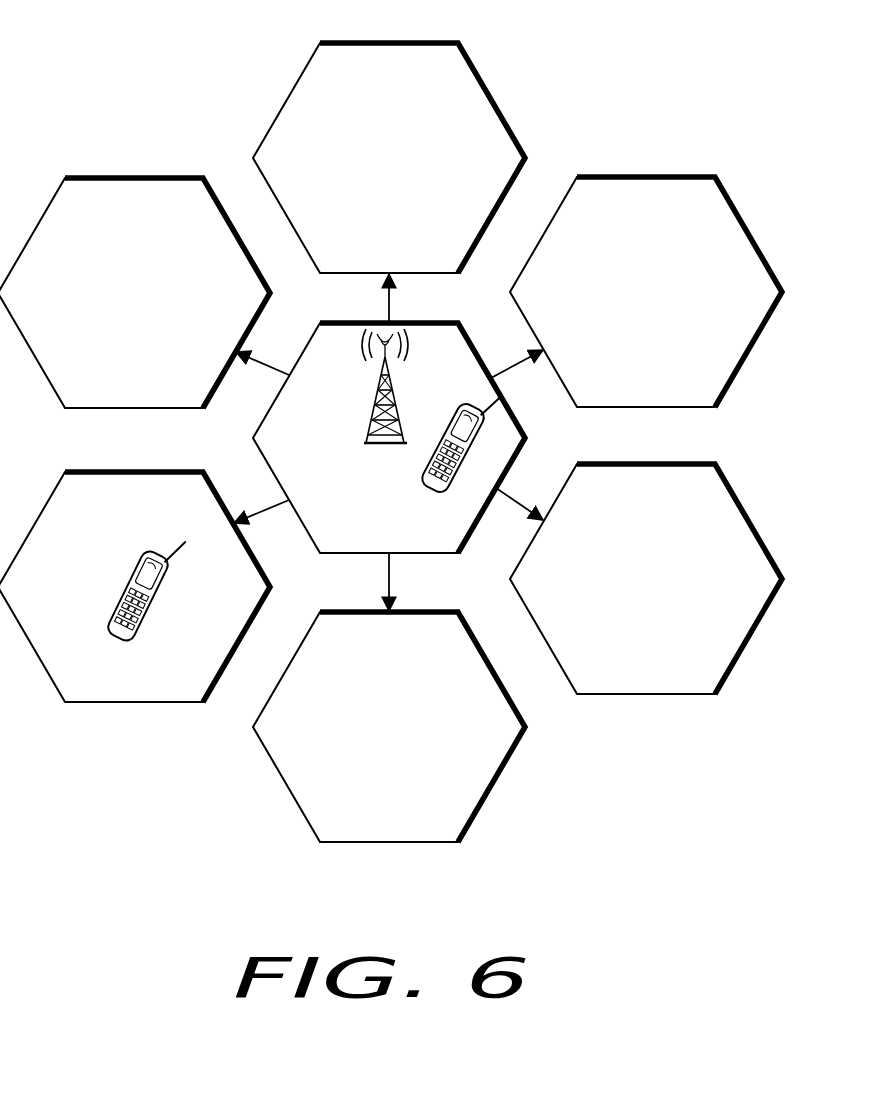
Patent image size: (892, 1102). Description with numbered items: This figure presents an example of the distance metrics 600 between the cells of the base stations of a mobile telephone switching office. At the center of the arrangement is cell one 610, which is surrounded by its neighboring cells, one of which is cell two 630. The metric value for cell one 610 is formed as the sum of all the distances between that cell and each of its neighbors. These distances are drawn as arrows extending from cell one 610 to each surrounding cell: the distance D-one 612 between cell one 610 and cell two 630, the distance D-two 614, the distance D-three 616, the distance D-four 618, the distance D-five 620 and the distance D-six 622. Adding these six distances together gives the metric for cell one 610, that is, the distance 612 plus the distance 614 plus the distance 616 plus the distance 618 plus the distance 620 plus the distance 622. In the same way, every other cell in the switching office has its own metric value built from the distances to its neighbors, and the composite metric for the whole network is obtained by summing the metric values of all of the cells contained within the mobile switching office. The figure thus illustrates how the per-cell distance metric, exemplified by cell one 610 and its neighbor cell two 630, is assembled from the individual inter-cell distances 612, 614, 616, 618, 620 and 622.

The distance metrics example 600 is at (748, 88).
The cell one 610 is at (497, 443).
The distance D1 612 is at (284, 506).
The distance D2 614 is at (276, 373).
The distance D3 616 is at (429, 300).
The distance D4 618 is at (494, 375).
The distance D5 620 is at (516, 502).
The distance D6 622 is at (429, 575).
The cell two 630 is at (83, 606).